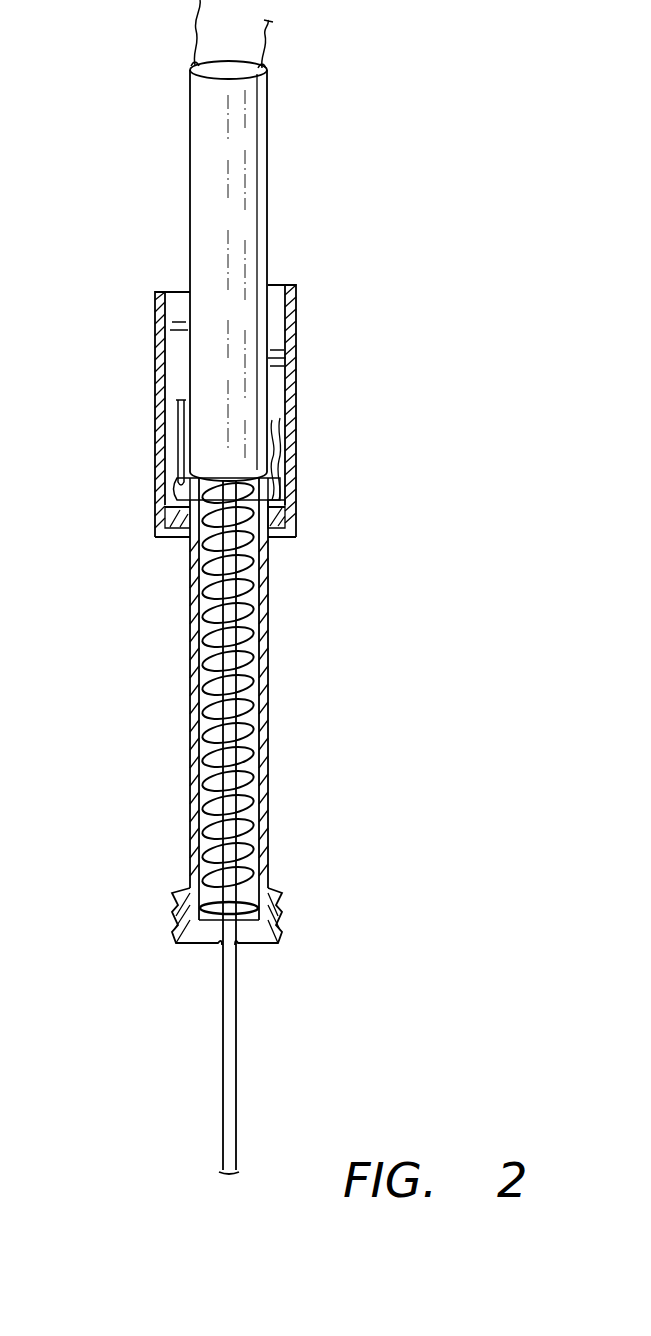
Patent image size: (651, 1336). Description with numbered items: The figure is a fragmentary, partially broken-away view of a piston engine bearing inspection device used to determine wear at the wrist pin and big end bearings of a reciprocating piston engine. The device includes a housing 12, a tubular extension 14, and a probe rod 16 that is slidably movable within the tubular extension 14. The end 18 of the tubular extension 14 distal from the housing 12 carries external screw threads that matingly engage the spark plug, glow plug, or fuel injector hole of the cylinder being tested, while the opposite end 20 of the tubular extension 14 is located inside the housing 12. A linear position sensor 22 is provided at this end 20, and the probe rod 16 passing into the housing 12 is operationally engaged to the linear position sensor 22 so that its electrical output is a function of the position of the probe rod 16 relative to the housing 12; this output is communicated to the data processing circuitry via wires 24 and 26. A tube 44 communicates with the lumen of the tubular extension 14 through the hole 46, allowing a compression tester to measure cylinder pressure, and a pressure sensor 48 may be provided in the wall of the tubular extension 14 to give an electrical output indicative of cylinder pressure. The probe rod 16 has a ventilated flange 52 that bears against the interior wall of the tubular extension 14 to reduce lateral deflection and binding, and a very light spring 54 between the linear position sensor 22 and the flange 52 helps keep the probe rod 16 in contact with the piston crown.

The housing 12 is at (297, 320).
The tubular extension 14 is at (270, 688).
The probe rod 16 is at (240, 1010).
The end of the tubular extension 18 is at (282, 910).
The end of the tubular extension 20 is at (158, 497).
The linear position sensor 22 is at (255, 172).
The wire 24 is at (193, 26).
The wire 26 is at (265, 42).
The tube 44 is at (172, 442).
The hole 46 is at (187, 482).
The pressure sensor 48 is at (265, 504).
The flange 52 is at (185, 912).
The spring 54 is at (200, 752).